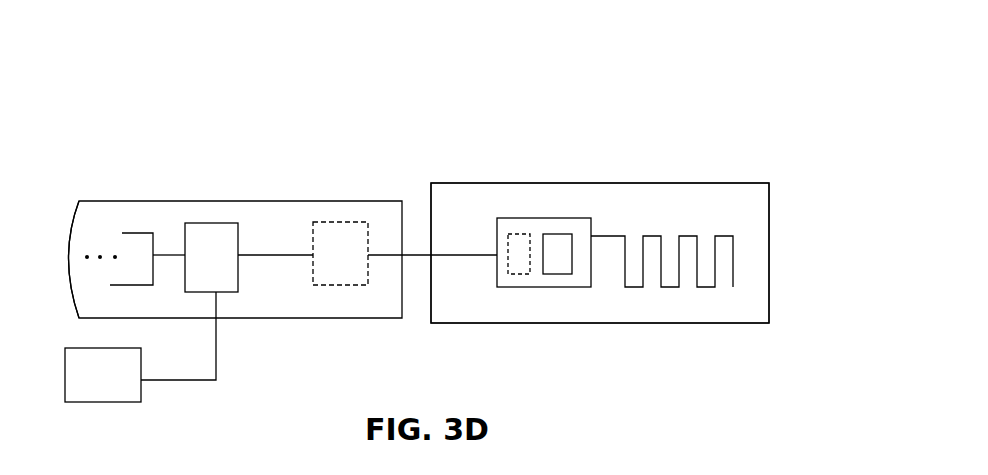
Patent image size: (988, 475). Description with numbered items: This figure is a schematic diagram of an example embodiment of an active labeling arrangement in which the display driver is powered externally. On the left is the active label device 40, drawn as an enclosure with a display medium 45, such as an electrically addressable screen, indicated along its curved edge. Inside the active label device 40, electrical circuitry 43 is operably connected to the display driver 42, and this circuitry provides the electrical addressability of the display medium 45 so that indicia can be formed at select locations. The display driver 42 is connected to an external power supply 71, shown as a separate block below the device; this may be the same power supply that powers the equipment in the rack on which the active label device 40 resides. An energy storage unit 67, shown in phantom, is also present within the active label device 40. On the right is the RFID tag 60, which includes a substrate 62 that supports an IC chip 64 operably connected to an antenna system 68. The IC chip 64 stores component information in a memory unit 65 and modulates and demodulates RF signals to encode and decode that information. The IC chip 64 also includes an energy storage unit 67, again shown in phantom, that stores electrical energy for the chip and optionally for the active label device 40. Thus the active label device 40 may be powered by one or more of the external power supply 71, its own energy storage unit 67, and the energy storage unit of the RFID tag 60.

The active label device 40 is at (204, 90).
The display driver 42 is at (195, 257).
The electrical circuitry 43 is at (127, 233).
The display medium 45 is at (88, 298).
The RFID tag 60 is at (695, 130).
The substrate 62 is at (443, 183).
The IC chip 64 is at (545, 218).
The memory unit 65 is at (563, 234).
The energy storage unit 67 is at (522, 234).
The antenna system 68 is at (732, 249).
The external power supply 71 is at (140, 347).